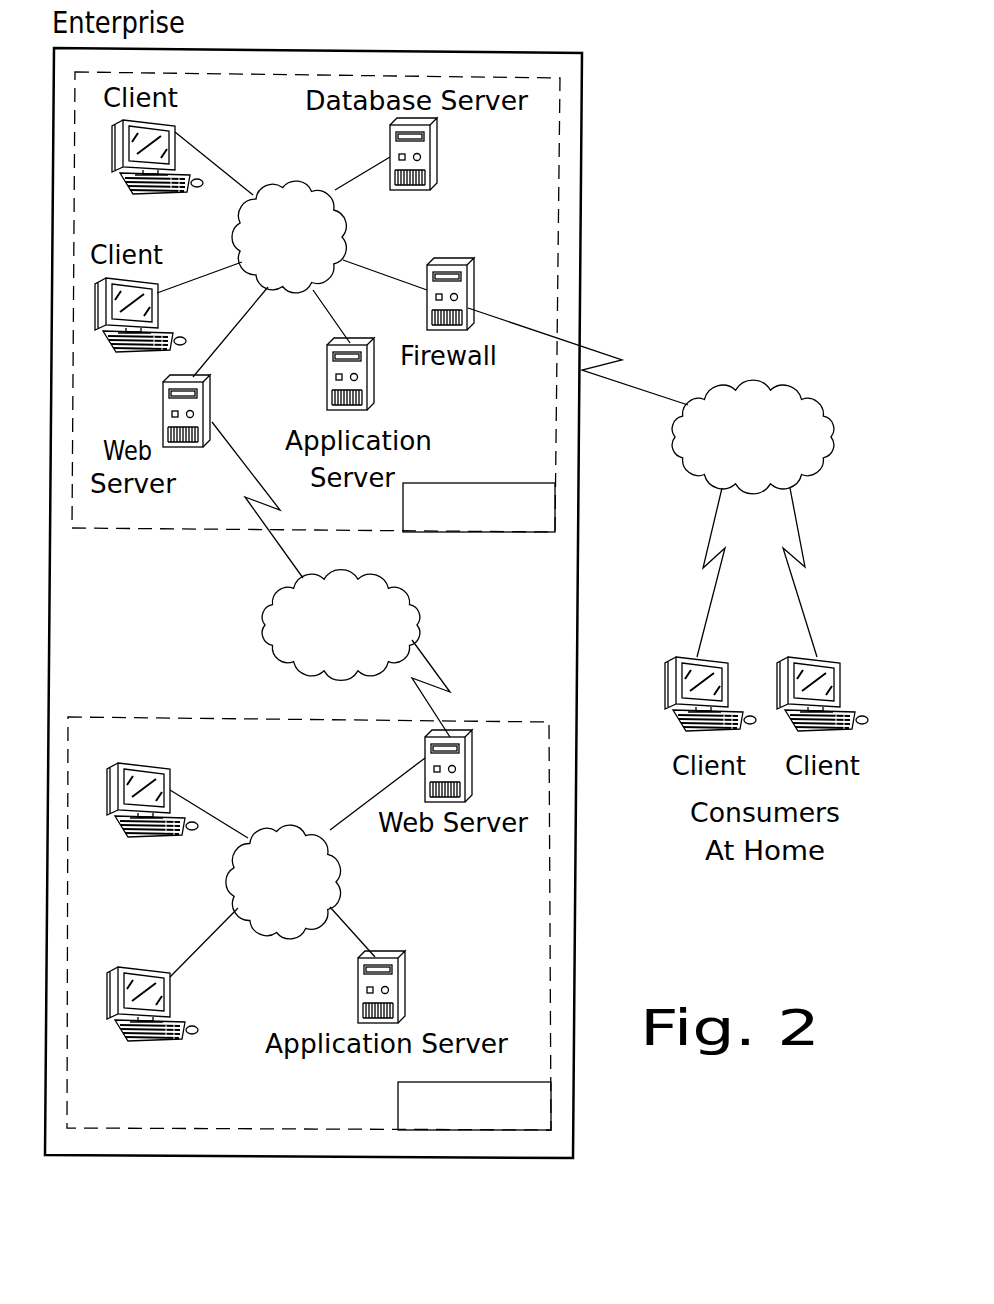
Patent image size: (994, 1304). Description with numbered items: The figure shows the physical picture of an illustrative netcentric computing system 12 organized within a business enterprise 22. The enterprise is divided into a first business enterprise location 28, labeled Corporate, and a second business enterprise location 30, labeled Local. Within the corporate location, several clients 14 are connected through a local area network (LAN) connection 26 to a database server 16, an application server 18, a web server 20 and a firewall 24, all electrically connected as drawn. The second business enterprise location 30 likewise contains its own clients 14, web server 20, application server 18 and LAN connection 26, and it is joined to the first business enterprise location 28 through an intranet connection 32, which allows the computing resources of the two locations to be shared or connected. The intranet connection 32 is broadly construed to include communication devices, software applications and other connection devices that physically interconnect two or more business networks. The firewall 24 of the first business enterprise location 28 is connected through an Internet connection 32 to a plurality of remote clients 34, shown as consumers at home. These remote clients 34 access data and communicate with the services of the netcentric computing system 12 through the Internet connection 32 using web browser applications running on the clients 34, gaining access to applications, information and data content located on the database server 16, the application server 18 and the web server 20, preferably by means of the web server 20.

The netcentric computing system 12 is at (680, 109).
The client 14 is at (175, 128).
The database server 16 is at (437, 148).
The application server 18 is at (326, 368).
The web server 20 is at (162, 402).
The business enterprise 22 is at (582, 288).
The firewall 24 is at (458, 258).
The local area network connection 26 is at (280, 186).
The first business enterprise location 28 is at (555, 508).
The second business enterprise location 30 is at (551, 1108).
The intranet connection / Internet connection 32 is at (410, 597).
The remote client 34 is at (680, 657).